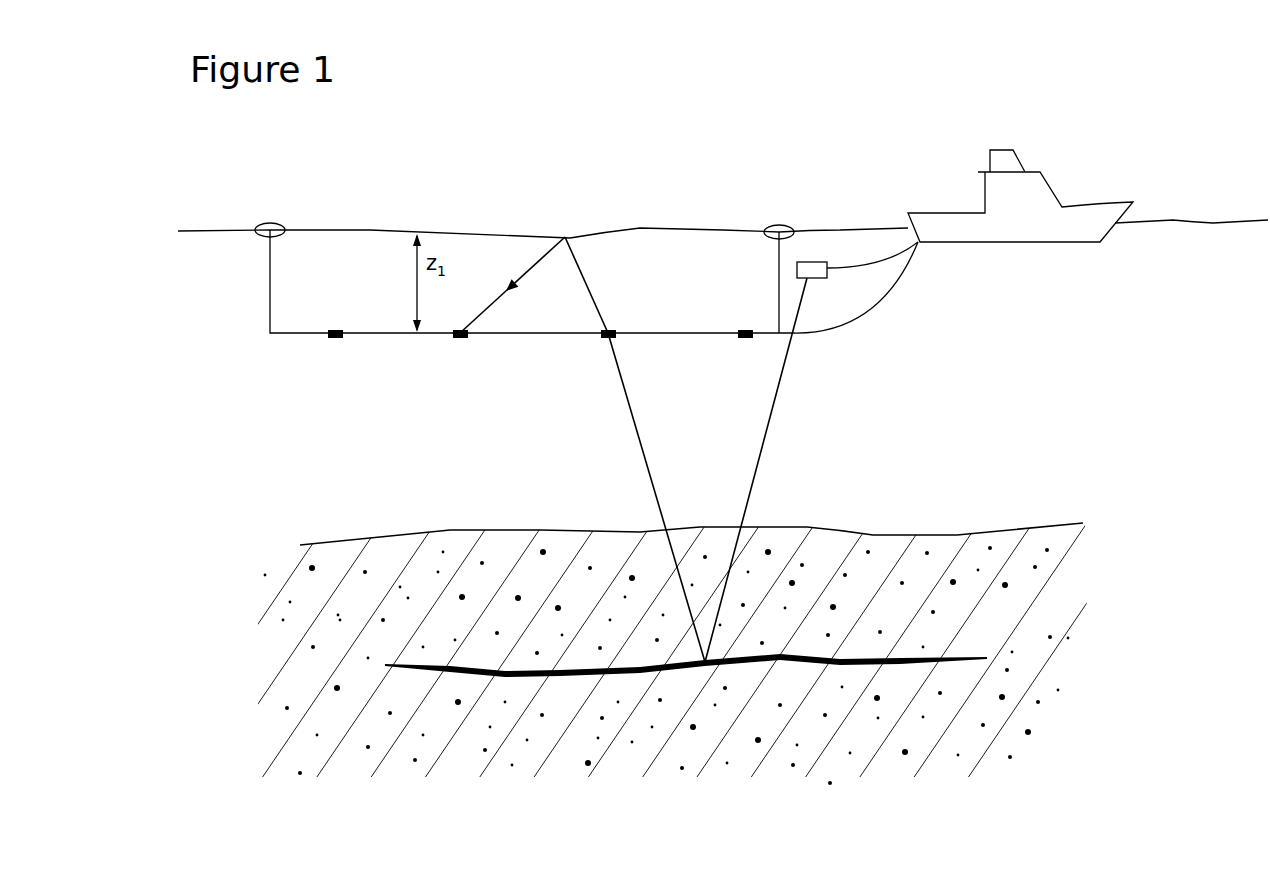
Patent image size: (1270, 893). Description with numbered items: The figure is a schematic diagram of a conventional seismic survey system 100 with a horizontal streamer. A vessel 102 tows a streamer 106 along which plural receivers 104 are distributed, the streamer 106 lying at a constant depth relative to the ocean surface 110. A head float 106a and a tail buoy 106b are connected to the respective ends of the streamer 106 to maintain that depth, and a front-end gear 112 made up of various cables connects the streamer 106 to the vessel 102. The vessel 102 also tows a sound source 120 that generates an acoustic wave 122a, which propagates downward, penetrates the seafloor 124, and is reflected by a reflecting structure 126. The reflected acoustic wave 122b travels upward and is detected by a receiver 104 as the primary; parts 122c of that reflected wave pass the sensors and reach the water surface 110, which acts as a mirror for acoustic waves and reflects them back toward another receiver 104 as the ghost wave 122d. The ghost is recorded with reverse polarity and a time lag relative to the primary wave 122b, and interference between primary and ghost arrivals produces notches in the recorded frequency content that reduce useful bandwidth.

The seismic survey system 100 is at (625, 110).
The vessel 102 is at (1045, 115).
The receiver 104 is at (606, 341).
The streamer 106 is at (688, 336).
The head float 106a is at (782, 224).
The tail buoy 106b is at (271, 222).
The ocean surface 110 is at (722, 228).
The front-end gear 112 is at (853, 310).
The sound source 120 is at (810, 279).
The acoustic wave 122a is at (757, 472).
The reflected acoustic wave 122b is at (648, 473).
The part of reflected wave 122c is at (613, 285).
The ghost wave 122d is at (511, 285).
The seafloor 124 is at (980, 530).
The reflecting structure 126 is at (958, 657).